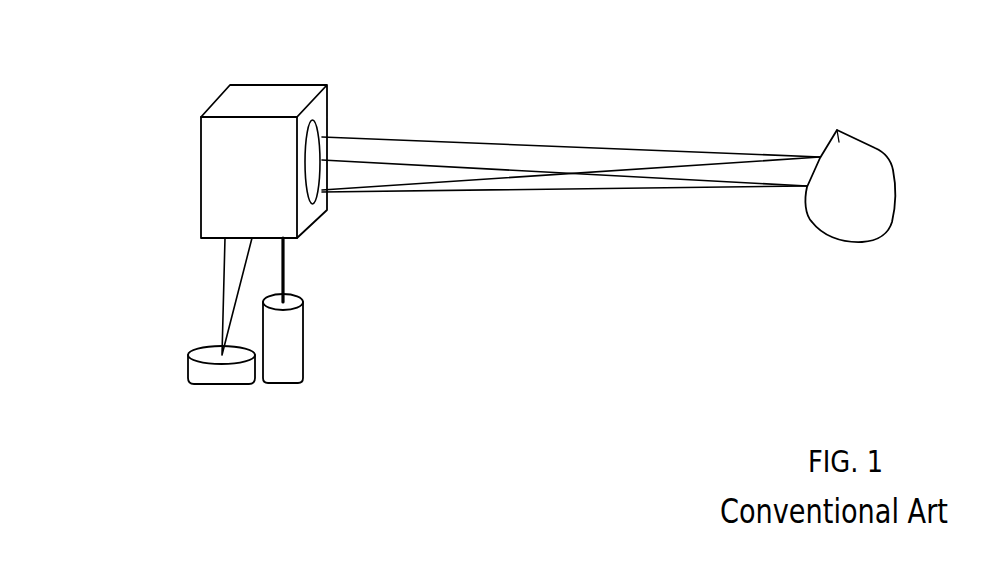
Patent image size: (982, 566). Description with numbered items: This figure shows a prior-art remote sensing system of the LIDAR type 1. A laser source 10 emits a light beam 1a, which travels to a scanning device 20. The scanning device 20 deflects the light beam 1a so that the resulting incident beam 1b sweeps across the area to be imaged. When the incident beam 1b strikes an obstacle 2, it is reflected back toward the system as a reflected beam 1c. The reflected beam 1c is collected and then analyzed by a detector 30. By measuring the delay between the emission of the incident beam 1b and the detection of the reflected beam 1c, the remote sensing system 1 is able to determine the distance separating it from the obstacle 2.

The LIDAR type system 1 is at (108, 130).
The light beam 1a is at (288, 272).
The incident beam 1b is at (448, 192).
The reflected beam 1c is at (453, 141).
The obstacle 2 is at (836, 128).
The laser source 10 is at (295, 337).
The scanning device 20 is at (270, 93).
The detector 30 is at (192, 370).